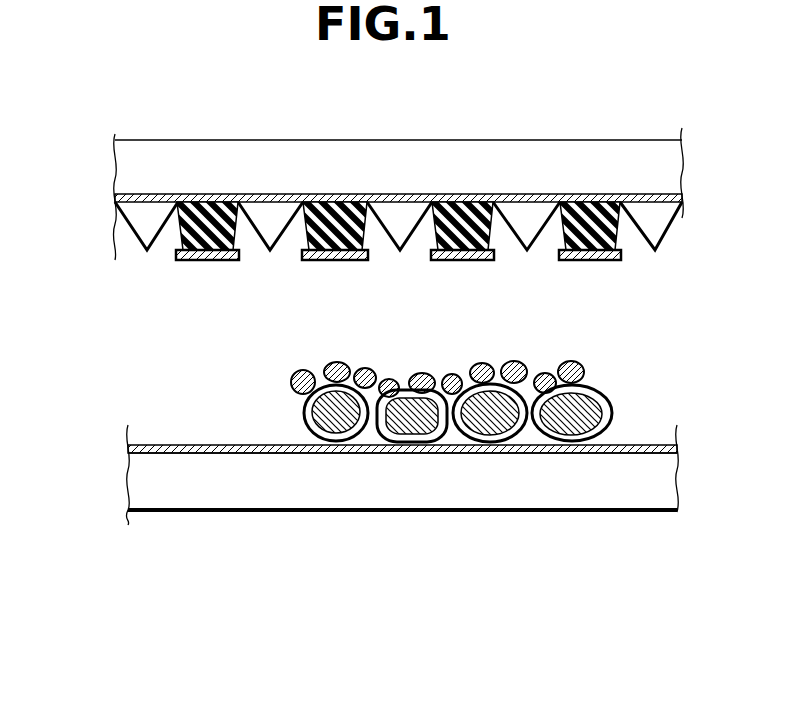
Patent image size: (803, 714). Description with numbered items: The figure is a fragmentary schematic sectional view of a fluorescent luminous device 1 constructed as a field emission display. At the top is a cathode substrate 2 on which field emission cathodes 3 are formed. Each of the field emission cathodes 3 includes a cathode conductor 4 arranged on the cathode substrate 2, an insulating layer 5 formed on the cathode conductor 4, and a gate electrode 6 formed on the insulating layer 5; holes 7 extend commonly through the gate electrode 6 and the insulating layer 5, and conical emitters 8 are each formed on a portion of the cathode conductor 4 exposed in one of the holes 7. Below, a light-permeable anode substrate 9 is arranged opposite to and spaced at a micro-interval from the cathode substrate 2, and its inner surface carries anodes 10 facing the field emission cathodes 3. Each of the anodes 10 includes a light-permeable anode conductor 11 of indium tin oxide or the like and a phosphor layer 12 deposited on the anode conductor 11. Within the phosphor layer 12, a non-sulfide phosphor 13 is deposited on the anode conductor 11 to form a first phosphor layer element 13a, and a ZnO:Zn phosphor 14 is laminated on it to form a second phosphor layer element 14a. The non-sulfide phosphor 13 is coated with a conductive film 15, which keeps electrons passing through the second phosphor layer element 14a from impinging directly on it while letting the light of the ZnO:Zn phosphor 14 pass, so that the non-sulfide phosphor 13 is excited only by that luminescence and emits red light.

The fluorescent luminous device 1 is at (633, 128).
The cathode substrate 2 is at (541, 160).
The field emission cathodes 3 is at (63, 246).
The cathode conductor 4 is at (117, 232).
The insulating layer 5 is at (183, 243).
The gate electrode 6 is at (197, 260).
The holes 7 is at (253, 253).
The emitters 8 is at (277, 248).
The anode substrate 9 is at (637, 488).
The anodes 10 is at (447, 605).
The anode conductor 11 is at (295, 452).
The phosphor layer 12 is at (508, 553).
The non-sulfide phosphor 13 is at (592, 396).
The first phosphor layer element 13a is at (363, 453).
The ZnO:Zn phosphor 14 is at (578, 362).
The second phosphor layer element 14a is at (487, 453).
The conductive film 15 is at (612, 416).